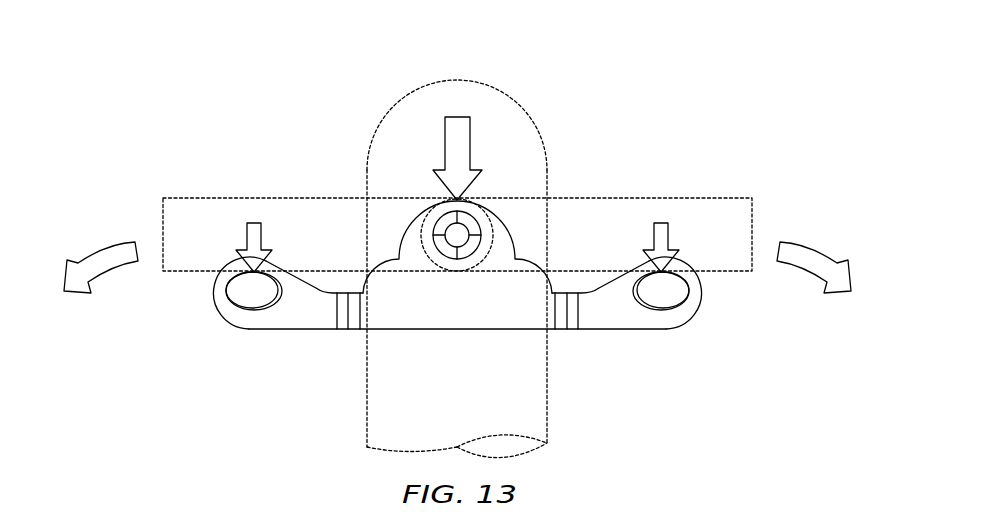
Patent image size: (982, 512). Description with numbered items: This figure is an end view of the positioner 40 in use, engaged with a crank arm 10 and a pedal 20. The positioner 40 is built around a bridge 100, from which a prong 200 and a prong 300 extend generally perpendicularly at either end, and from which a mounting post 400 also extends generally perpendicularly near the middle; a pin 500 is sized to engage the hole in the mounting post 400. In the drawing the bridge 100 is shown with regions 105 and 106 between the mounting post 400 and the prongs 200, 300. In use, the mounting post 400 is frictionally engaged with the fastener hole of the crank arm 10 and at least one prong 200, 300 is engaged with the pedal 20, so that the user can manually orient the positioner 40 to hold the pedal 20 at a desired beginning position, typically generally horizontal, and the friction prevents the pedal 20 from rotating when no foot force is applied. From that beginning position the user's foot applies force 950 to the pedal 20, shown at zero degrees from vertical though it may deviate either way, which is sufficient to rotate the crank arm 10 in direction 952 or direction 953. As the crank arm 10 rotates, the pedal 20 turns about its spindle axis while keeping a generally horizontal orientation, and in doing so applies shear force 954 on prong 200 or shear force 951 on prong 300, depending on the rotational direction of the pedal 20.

The crank arm 10 is at (367, 423).
The pedal 20 is at (602, 198).
The positioner 40 is at (642, 349).
The bridge 100 is at (286, 316).
The right serrations 105 is at (582, 315).
The left serrations 106 is at (338, 313).
The prong 200 is at (683, 313).
The prong 300 is at (233, 313).
The mounting post 400 is at (483, 252).
The pin 500 is at (438, 262).
The force 950 is at (457, 115).
The shear force 951 is at (247, 237).
The direction 952 is at (810, 247).
The direction 953 is at (105, 247).
The shear force 954 is at (668, 237).